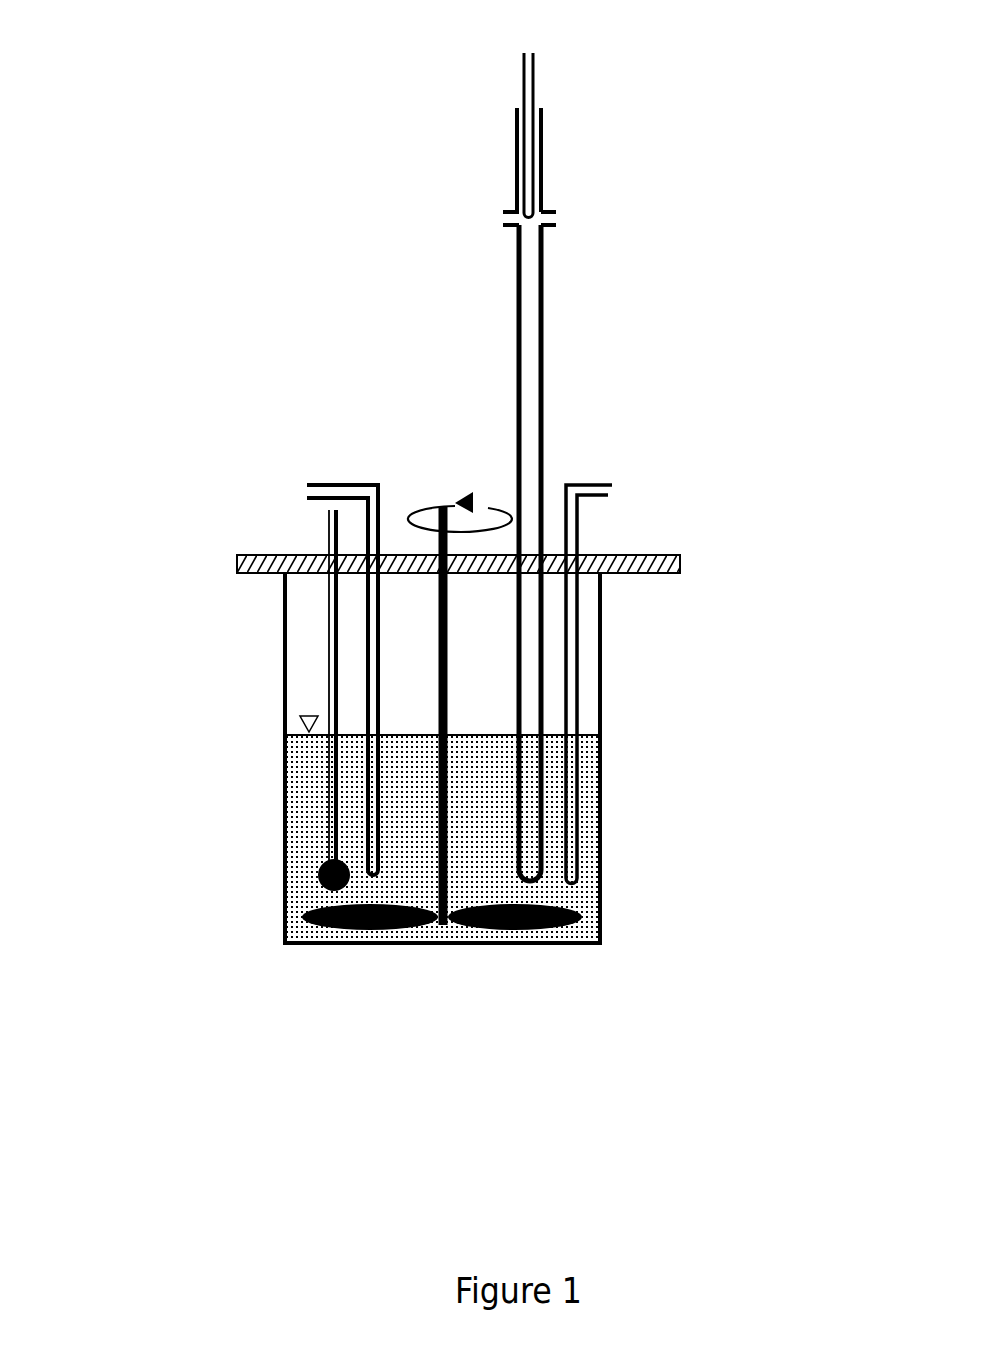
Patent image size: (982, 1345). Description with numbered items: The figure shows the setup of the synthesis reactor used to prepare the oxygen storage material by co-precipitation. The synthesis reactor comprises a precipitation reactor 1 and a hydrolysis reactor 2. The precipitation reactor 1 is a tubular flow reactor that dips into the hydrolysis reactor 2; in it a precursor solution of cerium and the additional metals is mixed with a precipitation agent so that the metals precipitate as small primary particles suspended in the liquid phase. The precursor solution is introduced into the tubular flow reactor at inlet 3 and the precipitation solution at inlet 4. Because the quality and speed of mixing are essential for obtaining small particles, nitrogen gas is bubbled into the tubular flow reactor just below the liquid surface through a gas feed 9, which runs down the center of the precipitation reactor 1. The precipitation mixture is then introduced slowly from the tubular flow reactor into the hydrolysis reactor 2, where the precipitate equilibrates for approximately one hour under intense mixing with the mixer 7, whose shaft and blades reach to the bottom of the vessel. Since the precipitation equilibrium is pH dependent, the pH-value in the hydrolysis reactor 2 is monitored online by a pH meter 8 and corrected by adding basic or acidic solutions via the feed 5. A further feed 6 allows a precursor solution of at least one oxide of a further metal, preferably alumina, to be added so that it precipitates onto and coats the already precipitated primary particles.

The precipitation reactor 1 is at (547, 367).
The hydrolysis reactor 2 is at (608, 763).
The precursor solution inlet 3 is at (500, 218).
The precipitation solution inlet 4 is at (560, 218).
The feed 5 is at (305, 483).
The feed 6 is at (622, 490).
The mixer 7 is at (285, 922).
The pH meter 8 is at (322, 663).
The gas feed 9 is at (530, 38).